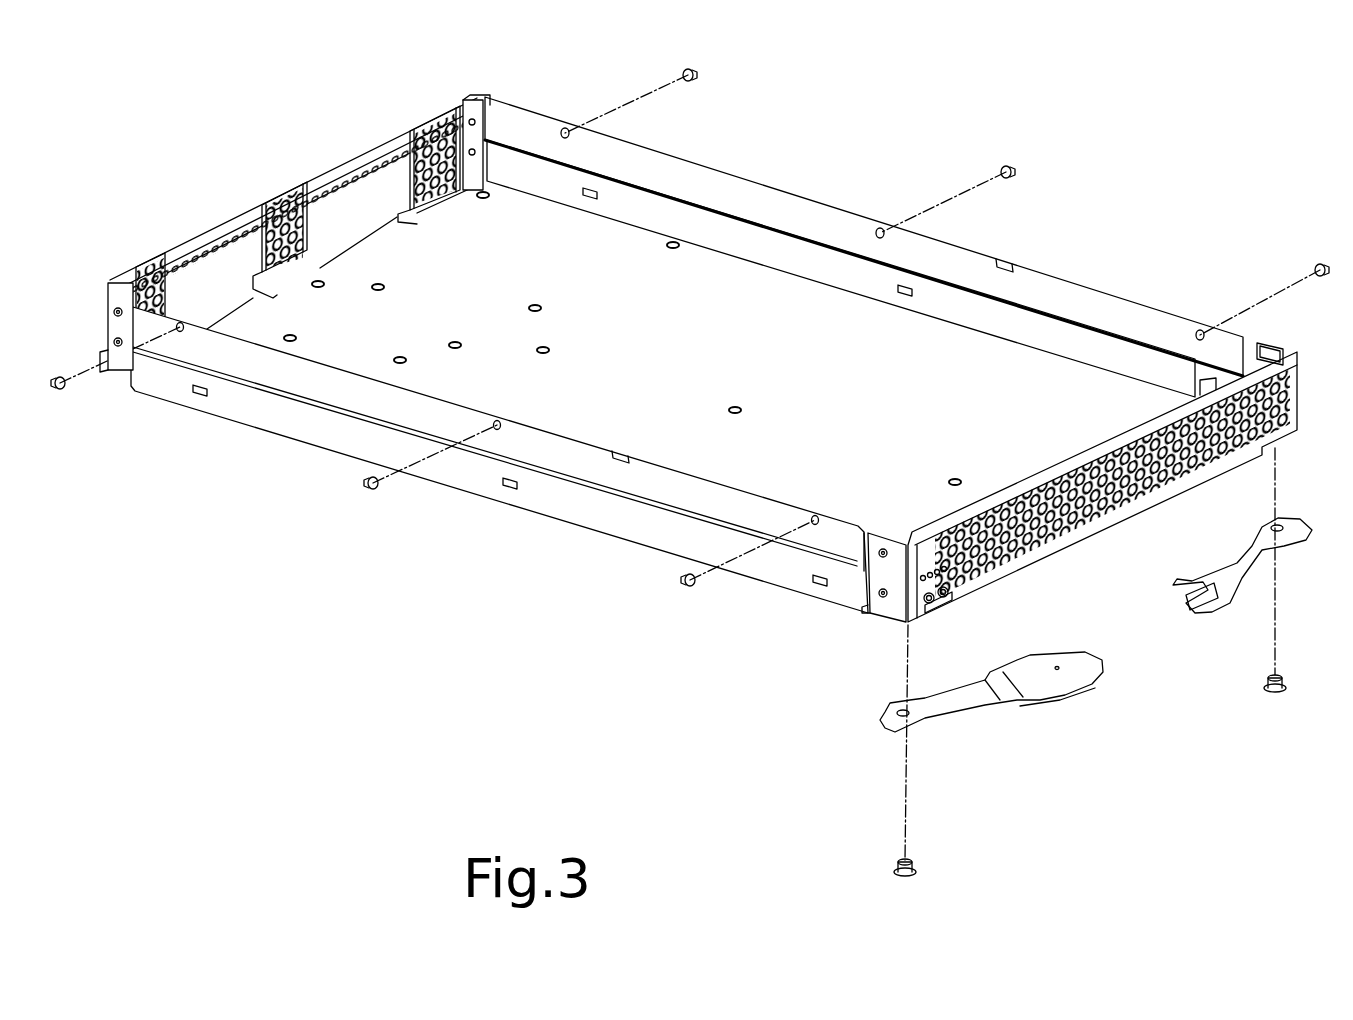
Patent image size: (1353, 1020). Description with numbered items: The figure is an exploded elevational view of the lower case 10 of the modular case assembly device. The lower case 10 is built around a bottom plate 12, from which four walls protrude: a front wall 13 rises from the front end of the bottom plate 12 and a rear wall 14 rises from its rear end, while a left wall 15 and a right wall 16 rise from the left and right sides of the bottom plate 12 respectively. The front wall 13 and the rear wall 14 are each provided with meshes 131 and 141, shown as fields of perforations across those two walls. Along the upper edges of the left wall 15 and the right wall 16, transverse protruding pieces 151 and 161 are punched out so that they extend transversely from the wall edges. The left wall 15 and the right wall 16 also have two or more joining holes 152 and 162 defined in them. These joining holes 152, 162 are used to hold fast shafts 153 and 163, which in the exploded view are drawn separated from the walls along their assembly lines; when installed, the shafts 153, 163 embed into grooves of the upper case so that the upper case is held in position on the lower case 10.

The lower case 10 is at (690, 466).
The bottom plate 12 is at (990, 370).
The front wall 13 is at (1095, 609).
The meshes 131 is at (1063, 533).
The rear wall 14 is at (300, 206).
The meshes 141 is at (428, 140).
The left wall 15 is at (478, 452).
The transverse protruding piece 151 is at (623, 456).
The joining holes 152 is at (497, 422).
The shafts 153 is at (372, 487).
The right wall 16 is at (907, 222).
The transverse protruding piece 161 is at (1003, 268).
The joining holes 162 is at (873, 230).
The shafts 163 is at (1010, 170).